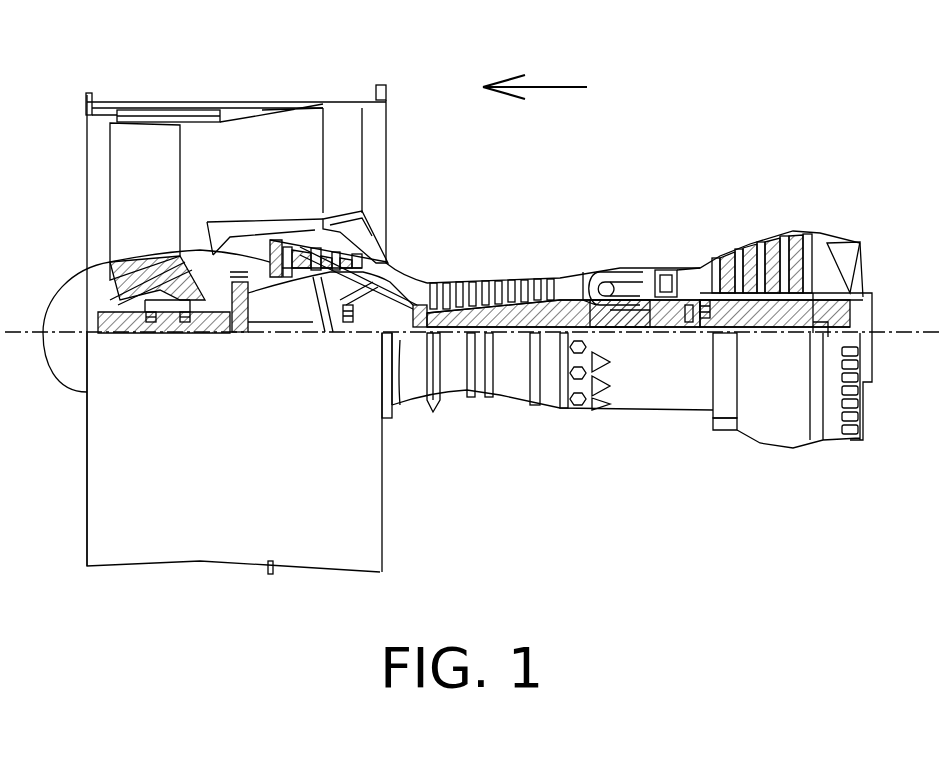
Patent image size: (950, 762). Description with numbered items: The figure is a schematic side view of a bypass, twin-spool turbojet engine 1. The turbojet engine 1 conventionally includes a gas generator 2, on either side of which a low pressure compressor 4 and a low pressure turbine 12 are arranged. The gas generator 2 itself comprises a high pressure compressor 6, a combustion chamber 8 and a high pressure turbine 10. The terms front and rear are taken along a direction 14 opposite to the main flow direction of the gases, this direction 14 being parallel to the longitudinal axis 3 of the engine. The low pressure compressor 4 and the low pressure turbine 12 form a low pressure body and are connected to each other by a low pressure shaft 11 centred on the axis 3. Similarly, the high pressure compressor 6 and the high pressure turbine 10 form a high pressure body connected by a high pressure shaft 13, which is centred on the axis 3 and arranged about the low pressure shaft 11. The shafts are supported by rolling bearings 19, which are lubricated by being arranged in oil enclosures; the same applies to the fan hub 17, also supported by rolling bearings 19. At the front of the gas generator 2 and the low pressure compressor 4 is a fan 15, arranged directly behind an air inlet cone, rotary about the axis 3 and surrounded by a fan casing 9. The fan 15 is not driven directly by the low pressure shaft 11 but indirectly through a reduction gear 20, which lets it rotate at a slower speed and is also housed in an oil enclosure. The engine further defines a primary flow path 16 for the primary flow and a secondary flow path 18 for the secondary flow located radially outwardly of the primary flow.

The turbojet engine 1 is at (558, 203).
The gas generator 2 is at (497, 410).
The longitudinal axis 3 is at (18, 333).
The low pressure compressor 4 is at (345, 255).
The high pressure compressor 6 is at (483, 283).
The combustion chamber 8 is at (597, 268).
The fan casing 9 is at (195, 110).
The high pressure turbine 10 is at (665, 268).
The low pressure shaft 11 is at (400, 335).
The low pressure turbine 12 is at (770, 258).
The high pressure shaft 13 is at (623, 340).
The direction 14 is at (563, 87).
The fan 15 is at (150, 132).
The primary flow path 16 is at (415, 288).
The fan hub 17 is at (149, 322).
The secondary flow path 18 is at (252, 168).
The rolling bearings 19 is at (186, 322).
The reduction gear 20 is at (240, 322).